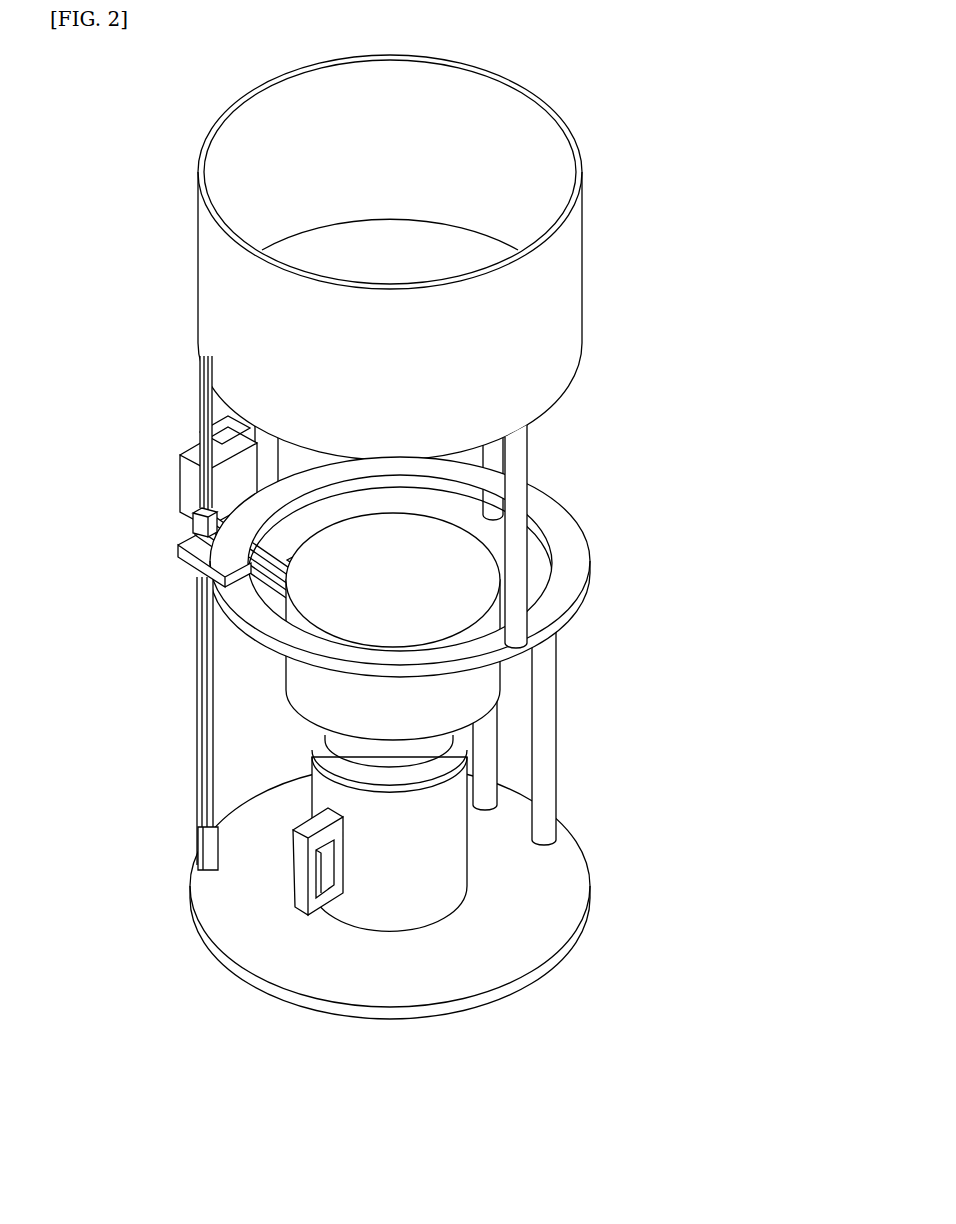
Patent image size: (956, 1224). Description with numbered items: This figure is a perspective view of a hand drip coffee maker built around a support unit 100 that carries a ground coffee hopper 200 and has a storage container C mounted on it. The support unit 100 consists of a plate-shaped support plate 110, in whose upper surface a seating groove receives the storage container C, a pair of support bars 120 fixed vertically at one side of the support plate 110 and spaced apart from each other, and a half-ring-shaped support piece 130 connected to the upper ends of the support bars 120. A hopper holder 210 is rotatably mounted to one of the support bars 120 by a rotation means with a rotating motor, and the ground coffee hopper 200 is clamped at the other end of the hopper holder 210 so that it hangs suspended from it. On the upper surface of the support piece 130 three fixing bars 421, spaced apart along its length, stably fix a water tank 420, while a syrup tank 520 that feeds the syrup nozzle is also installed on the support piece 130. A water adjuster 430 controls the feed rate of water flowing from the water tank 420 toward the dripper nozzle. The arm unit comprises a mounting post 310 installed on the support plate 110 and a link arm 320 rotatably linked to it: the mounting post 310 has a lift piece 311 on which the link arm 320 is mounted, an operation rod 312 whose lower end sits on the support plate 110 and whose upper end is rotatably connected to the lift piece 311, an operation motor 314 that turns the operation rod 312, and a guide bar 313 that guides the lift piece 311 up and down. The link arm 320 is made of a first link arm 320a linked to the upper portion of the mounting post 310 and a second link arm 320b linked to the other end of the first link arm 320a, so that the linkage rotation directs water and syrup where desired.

The support unit 100 is at (388, 784).
The support plate 110 is at (355, 975).
The support bars 120 is at (550, 787).
The support piece 130 is at (557, 612).
The ground coffee hopper 200 is at (460, 555).
The hopper holder 210 is at (298, 658).
The storage container C is at (430, 893).
The mounting post 310 is at (156, 706).
The lift piece 311 is at (195, 560).
The operation rod 312 is at (200, 778).
The guide bar 313 is at (200, 735).
The operation motor 314 is at (200, 852).
The link arm 320 is at (362, 500).
The first link arm 320a is at (225, 592).
The second link arm 320b is at (420, 497).
The water tank 420 is at (557, 292).
The fixing bars 421 is at (517, 570).
The water adjuster 430 is at (190, 530).
The syrup tank 520 is at (220, 437).